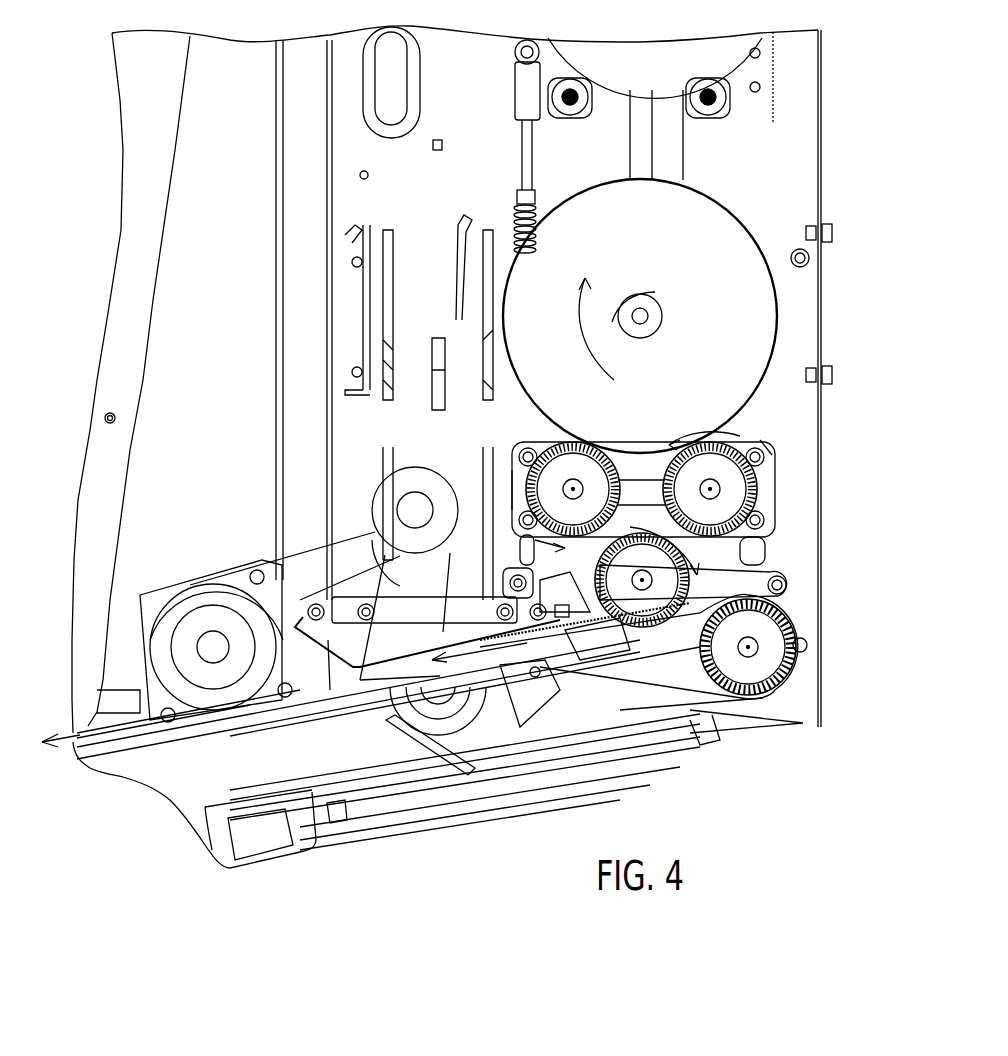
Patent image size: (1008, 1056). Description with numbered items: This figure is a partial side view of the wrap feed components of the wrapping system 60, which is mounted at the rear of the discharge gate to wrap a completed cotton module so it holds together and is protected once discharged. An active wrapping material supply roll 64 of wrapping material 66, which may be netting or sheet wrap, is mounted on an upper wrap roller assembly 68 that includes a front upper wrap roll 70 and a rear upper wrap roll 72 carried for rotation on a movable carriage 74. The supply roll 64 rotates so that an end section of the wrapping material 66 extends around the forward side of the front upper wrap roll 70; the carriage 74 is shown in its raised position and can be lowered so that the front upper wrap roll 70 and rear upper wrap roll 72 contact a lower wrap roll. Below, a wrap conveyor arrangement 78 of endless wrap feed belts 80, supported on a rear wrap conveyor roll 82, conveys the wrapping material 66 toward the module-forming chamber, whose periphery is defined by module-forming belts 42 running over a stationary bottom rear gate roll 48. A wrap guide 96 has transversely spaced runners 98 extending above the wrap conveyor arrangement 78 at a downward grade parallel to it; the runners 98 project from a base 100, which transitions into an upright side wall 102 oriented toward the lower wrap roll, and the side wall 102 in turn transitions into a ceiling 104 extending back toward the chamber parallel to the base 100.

The belts 42 is at (276, 458).
The bottom rear gate roll 48 is at (205, 585).
The wrapping system 60 is at (838, 167).
The wrapping material supply roll 64 is at (715, 200).
The wrapping material 66 is at (788, 326).
The upper wrap roller assembly 68 is at (790, 535).
The front upper wrap roll 70 is at (533, 452).
The rear upper wrap roll 72 is at (763, 493).
The carriage 74 is at (775, 470).
The wrap conveyor arrangement 78 is at (790, 705).
The wrap feed belts 80 is at (368, 767).
The rear wrap conveyor roll 82 is at (790, 665).
The wrap guide 96 is at (533, 625).
The runners 98 is at (320, 640).
The base 100 is at (585, 615).
The side wall 102 is at (612, 598).
The ceiling 104 is at (560, 575).